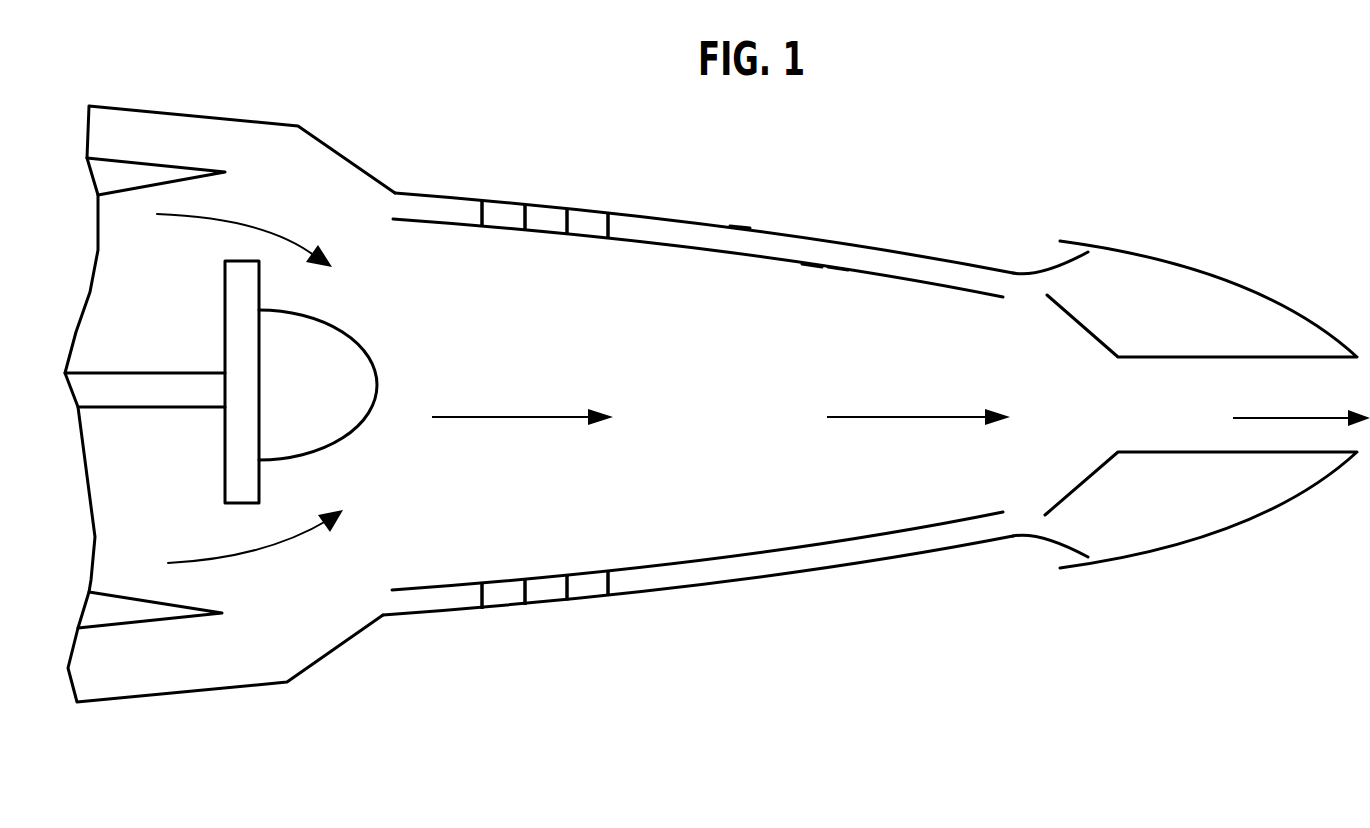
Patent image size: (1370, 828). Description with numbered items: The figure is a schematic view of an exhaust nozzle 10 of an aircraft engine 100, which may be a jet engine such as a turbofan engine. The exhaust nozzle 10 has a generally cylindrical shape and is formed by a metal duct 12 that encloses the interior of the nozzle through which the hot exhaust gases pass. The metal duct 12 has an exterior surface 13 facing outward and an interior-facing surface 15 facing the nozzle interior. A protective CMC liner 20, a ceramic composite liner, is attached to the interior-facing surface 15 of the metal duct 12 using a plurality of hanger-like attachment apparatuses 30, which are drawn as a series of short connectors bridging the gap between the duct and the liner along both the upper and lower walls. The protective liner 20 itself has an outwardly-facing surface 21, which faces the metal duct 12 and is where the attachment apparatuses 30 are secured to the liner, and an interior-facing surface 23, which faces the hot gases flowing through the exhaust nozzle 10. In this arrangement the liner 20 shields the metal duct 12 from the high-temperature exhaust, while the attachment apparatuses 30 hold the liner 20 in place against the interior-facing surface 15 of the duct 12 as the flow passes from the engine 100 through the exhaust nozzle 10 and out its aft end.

The aircraft engine 100 is at (212, 143).
The exhaust nozzle 10 is at (942, 193).
The metal duct 12 is at (643, 196).
The protective CMC liner 20 is at (624, 262).
The exterior surface 13 is at (740, 227).
The interior-facing surface 15 is at (788, 240).
The outwardly-facing surface 21 is at (837, 263).
The interior-facing surface 23 is at (812, 264).
The attachment apparatus 30 is at (480, 218).